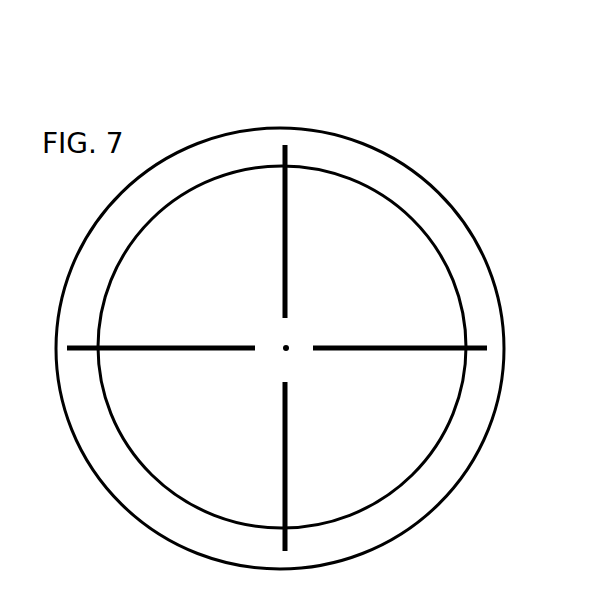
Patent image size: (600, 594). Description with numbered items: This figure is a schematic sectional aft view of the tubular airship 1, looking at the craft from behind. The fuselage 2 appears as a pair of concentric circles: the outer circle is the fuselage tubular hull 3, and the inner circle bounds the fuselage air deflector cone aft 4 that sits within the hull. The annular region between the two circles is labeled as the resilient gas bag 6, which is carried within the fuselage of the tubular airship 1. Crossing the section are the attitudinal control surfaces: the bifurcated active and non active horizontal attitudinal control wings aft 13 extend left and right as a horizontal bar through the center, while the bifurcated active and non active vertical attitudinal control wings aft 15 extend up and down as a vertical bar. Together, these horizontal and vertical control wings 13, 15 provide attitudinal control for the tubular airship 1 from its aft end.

The tubular airship 1 is at (343, 71).
The fuselage 2 is at (373, 128).
The fuselage tubular hull 3 is at (395, 158).
The fuselage air deflector cone aft 4 is at (455, 273).
The resilient gas bag 6 is at (336, 277).
The bifurcated active & non active horizontal attitudinal control wings aft 13 is at (433, 350).
The bifurcated active & non active vertical attitudinal control wings aft 15 is at (288, 513).